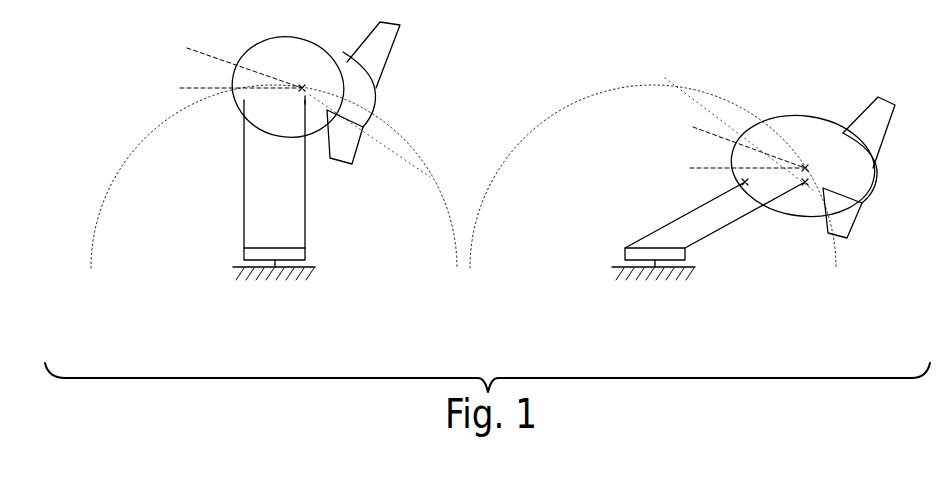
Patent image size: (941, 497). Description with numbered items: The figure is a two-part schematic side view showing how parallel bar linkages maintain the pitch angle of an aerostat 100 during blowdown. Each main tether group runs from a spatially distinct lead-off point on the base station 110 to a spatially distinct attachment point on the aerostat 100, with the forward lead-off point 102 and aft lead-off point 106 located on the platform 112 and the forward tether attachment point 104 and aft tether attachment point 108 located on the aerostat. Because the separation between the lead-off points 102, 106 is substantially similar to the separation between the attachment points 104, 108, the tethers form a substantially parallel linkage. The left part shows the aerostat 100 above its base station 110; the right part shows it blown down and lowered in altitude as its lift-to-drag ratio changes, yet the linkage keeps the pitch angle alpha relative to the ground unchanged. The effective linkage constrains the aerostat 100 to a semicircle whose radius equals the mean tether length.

The aerostat 100 is at (328, 63).
The forward lead-off point 102 is at (244, 248).
The forward tether attachment point 104 is at (245, 100).
The aft lead-off point 106 is at (305, 248).
The aft tether attachment point 108 is at (305, 100).
The base station 110 is at (340, 247).
The platform 112 is at (625, 248).